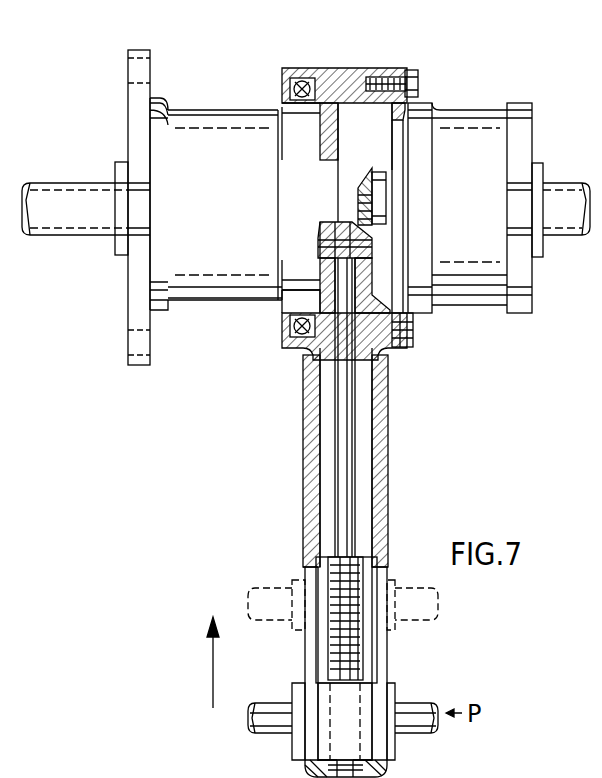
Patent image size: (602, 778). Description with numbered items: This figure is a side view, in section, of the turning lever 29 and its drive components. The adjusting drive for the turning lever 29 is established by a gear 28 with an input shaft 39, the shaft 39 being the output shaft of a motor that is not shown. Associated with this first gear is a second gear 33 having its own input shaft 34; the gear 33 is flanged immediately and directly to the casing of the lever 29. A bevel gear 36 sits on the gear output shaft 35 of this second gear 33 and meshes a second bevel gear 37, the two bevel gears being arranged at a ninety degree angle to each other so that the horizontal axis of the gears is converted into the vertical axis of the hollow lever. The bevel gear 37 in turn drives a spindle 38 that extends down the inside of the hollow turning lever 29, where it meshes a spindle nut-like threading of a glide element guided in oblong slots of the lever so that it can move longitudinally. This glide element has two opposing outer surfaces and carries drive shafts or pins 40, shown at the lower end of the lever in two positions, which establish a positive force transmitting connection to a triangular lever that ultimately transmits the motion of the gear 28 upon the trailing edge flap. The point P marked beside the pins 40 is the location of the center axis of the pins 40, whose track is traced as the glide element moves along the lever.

The gear 28 is at (213, 290).
The turning lever 29 is at (387, 420).
The gear 33 is at (466, 128).
The input shaft 34 is at (567, 195).
The gear output shaft 35 is at (386, 186).
The bevel gear 36 is at (382, 212).
The bevel gear 37 is at (313, 234).
The spindle 38 is at (350, 462).
The input shaft 39 is at (80, 192).
The pins 40 is at (277, 712).